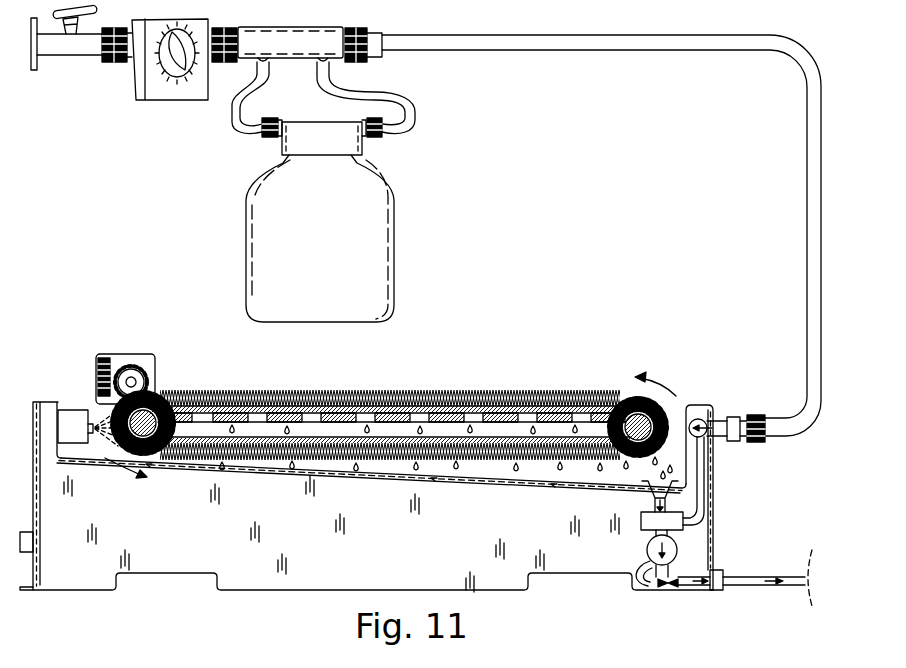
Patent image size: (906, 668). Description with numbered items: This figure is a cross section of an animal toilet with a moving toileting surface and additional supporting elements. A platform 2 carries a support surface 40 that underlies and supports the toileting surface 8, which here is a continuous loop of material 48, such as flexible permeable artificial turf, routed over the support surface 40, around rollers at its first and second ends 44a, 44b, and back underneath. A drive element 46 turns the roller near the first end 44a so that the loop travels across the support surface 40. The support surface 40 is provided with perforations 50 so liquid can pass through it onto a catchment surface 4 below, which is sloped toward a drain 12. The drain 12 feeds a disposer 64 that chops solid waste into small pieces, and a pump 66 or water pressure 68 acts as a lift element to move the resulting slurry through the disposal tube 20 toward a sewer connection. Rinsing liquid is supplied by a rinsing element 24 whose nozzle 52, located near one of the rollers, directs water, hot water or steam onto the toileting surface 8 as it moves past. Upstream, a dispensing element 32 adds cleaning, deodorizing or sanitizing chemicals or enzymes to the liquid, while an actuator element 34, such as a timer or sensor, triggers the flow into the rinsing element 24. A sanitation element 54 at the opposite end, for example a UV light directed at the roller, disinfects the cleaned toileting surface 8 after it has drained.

The platform 2 is at (62, 516).
The catchment surface 4 is at (318, 472).
The toileting surface 8 is at (397, 403).
The drain 12 is at (648, 493).
The disposal tube 20 is at (787, 577).
The rinsing element 24 is at (782, 413).
The dispensing element 32 is at (388, 223).
The actuator element 34 is at (163, 100).
The support surface 40 is at (393, 392).
The first end of the support surface 44a is at (155, 405).
The second end of the support surface 44b is at (629, 396).
The drive element 46 is at (114, 363).
The continuous loop of material 48 is at (229, 398).
The perforations 50 is at (293, 398).
The nozzle 52 is at (687, 405).
The sanitation element 54 is at (73, 410).
The disposer 64 is at (683, 521).
The pump 66 is at (650, 553).
The water pressure 68 is at (668, 586).